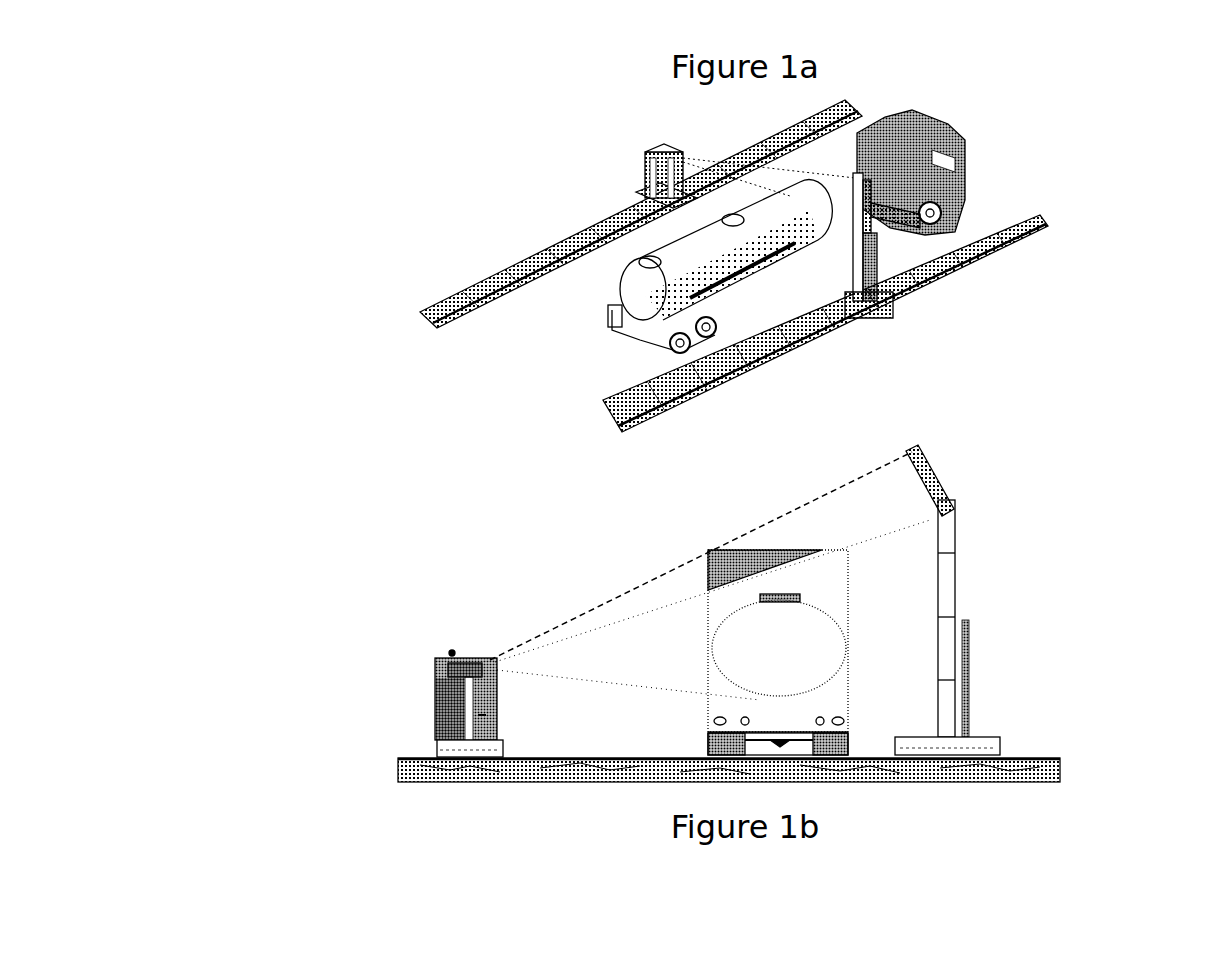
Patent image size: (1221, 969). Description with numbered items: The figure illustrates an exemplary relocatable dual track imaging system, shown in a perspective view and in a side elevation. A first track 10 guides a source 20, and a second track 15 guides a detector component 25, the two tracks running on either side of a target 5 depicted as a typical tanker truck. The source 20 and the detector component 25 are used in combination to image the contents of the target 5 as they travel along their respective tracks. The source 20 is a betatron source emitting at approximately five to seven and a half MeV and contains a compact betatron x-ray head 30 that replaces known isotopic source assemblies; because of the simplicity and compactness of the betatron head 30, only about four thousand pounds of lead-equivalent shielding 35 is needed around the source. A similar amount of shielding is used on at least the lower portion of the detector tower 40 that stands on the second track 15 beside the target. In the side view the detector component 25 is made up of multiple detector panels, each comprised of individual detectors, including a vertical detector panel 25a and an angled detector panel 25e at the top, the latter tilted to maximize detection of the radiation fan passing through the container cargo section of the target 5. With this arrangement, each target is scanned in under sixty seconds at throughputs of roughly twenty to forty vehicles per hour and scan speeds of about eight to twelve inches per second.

In FIG. 1A, the target 5 is at (657, 300).
In FIG. 1B, the target 5 is at (820, 670).
In FIG. 1A, the first track 10 is at (572, 228).
In FIG. 1B, the first track 10 is at (437, 752).
In FIG. 1A, the second track 15 is at (832, 352).
In FIG. 1B, the second track 15 is at (1002, 752).
In FIG. 1A, the source 20 is at (652, 158).
In FIG. 1B, the source 20 is at (432, 660).
In FIG. 1A, the detector component 25 is at (876, 210).
In FIG. 1B, the detector panel 25a is at (954, 697).
In FIG. 1B, the detector panel 25e is at (910, 475).
In FIG. 1B, the betatron x-ray head 30 is at (470, 660).
In FIG. 1B, the shielding 35 is at (448, 700).
In FIG. 1B, the detector tower 40 is at (966, 620).